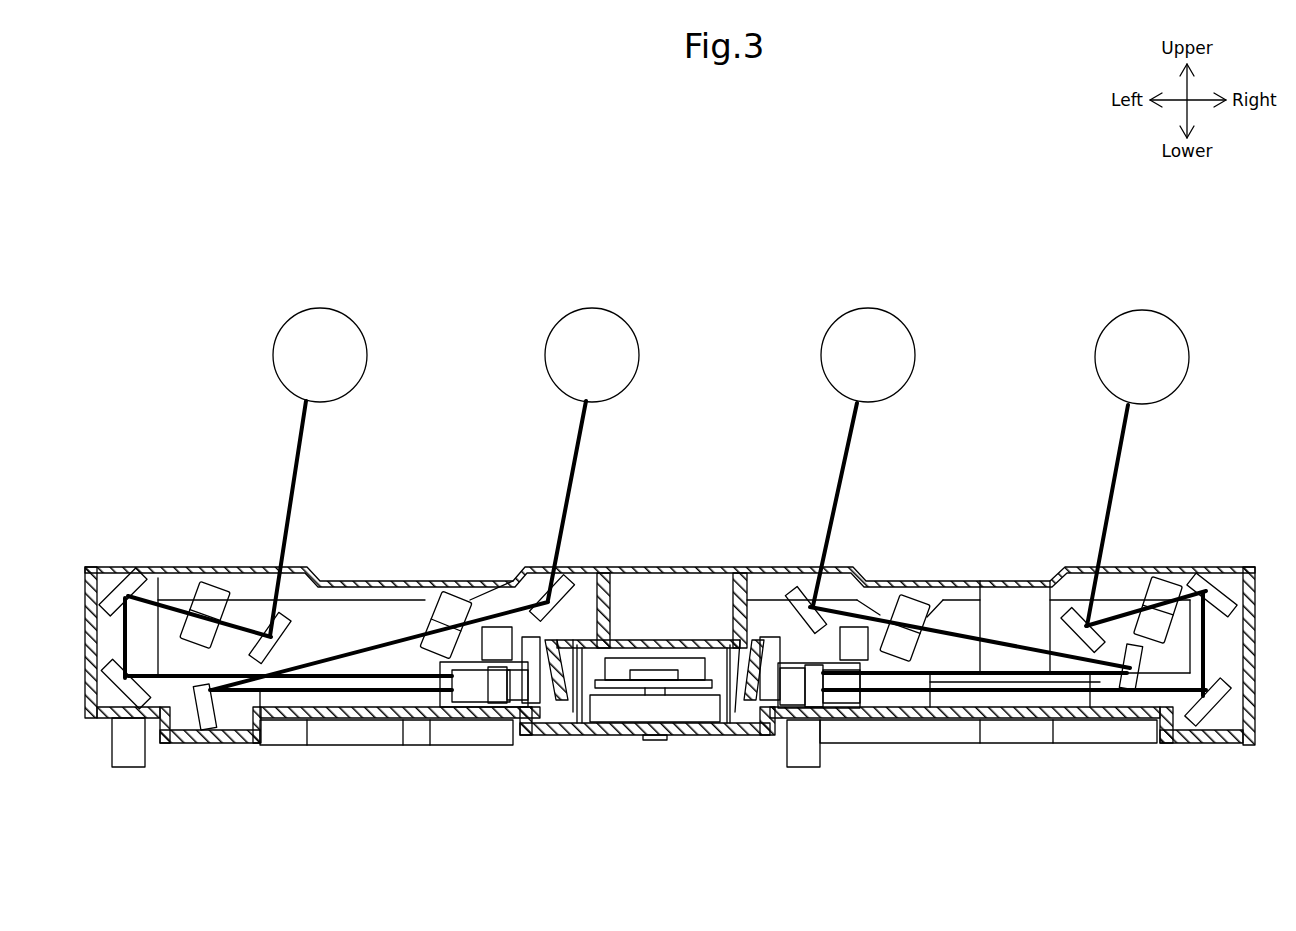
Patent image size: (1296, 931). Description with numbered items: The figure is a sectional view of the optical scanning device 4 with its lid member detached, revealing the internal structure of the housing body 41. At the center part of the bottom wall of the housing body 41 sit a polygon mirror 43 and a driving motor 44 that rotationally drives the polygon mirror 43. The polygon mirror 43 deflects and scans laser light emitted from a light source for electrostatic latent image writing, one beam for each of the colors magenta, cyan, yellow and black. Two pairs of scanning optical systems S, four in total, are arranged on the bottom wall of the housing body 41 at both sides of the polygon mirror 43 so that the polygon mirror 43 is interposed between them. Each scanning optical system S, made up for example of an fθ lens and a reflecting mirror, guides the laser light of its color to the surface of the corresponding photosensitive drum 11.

The optical scanning device 4 is at (1212, 538).
The photosensitive drum 11 is at (362, 335).
The scanning optical system S is at (176, 588).
The housing body 41 is at (176, 747).
The polygon mirror 43 is at (668, 652).
The driving motor 44 is at (686, 712).